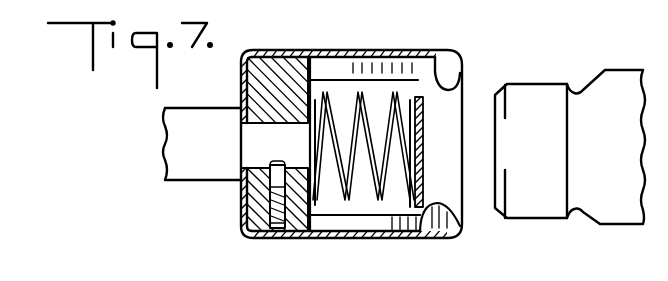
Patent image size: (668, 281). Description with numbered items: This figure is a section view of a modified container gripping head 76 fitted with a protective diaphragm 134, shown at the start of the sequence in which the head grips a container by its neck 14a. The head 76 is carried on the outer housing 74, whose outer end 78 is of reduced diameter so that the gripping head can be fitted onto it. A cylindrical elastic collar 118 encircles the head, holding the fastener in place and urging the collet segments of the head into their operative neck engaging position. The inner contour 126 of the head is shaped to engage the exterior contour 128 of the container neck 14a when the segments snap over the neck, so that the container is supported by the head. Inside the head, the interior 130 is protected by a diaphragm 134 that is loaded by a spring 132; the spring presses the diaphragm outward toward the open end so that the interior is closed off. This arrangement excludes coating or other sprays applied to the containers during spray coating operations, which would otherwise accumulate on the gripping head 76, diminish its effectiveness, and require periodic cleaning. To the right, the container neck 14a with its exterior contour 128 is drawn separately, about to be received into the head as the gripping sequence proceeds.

The container neck 14a is at (553, 234).
The outer housing 74 is at (173, 172).
The container gripping head 76 is at (377, 50).
The outer end of the outer housing 78 is at (255, 150).
The cylindrical elastic collar 118 is at (408, 232).
The inner contour of the collet 126 is at (388, 82).
The exterior contour of the container neck 128 is at (582, 218).
The interior of the gripping head 130 is at (362, 178).
The spring 132 is at (380, 203).
The diaphragm 134 is at (417, 102).